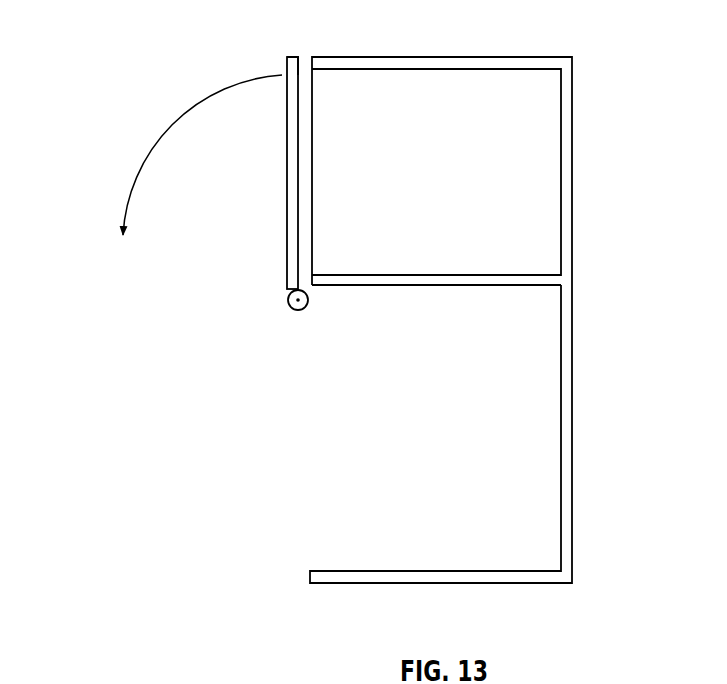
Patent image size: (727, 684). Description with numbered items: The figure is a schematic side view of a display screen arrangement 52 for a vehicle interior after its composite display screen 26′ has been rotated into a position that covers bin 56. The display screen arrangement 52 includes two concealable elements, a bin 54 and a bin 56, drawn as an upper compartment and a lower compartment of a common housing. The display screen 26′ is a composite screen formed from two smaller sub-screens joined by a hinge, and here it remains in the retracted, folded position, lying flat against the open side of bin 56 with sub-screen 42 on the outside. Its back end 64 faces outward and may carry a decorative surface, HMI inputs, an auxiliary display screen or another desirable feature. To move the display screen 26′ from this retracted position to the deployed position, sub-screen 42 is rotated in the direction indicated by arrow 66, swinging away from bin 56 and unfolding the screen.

The display screen arrangement 52 is at (107, 57).
The sub-screen 42 is at (286, 62).
The display screen 26′ is at (283, 157).
The back end 64 is at (286, 232).
The arrow 66 is at (155, 137).
The bin 56 is at (544, 131).
The bin 54 is at (544, 378).